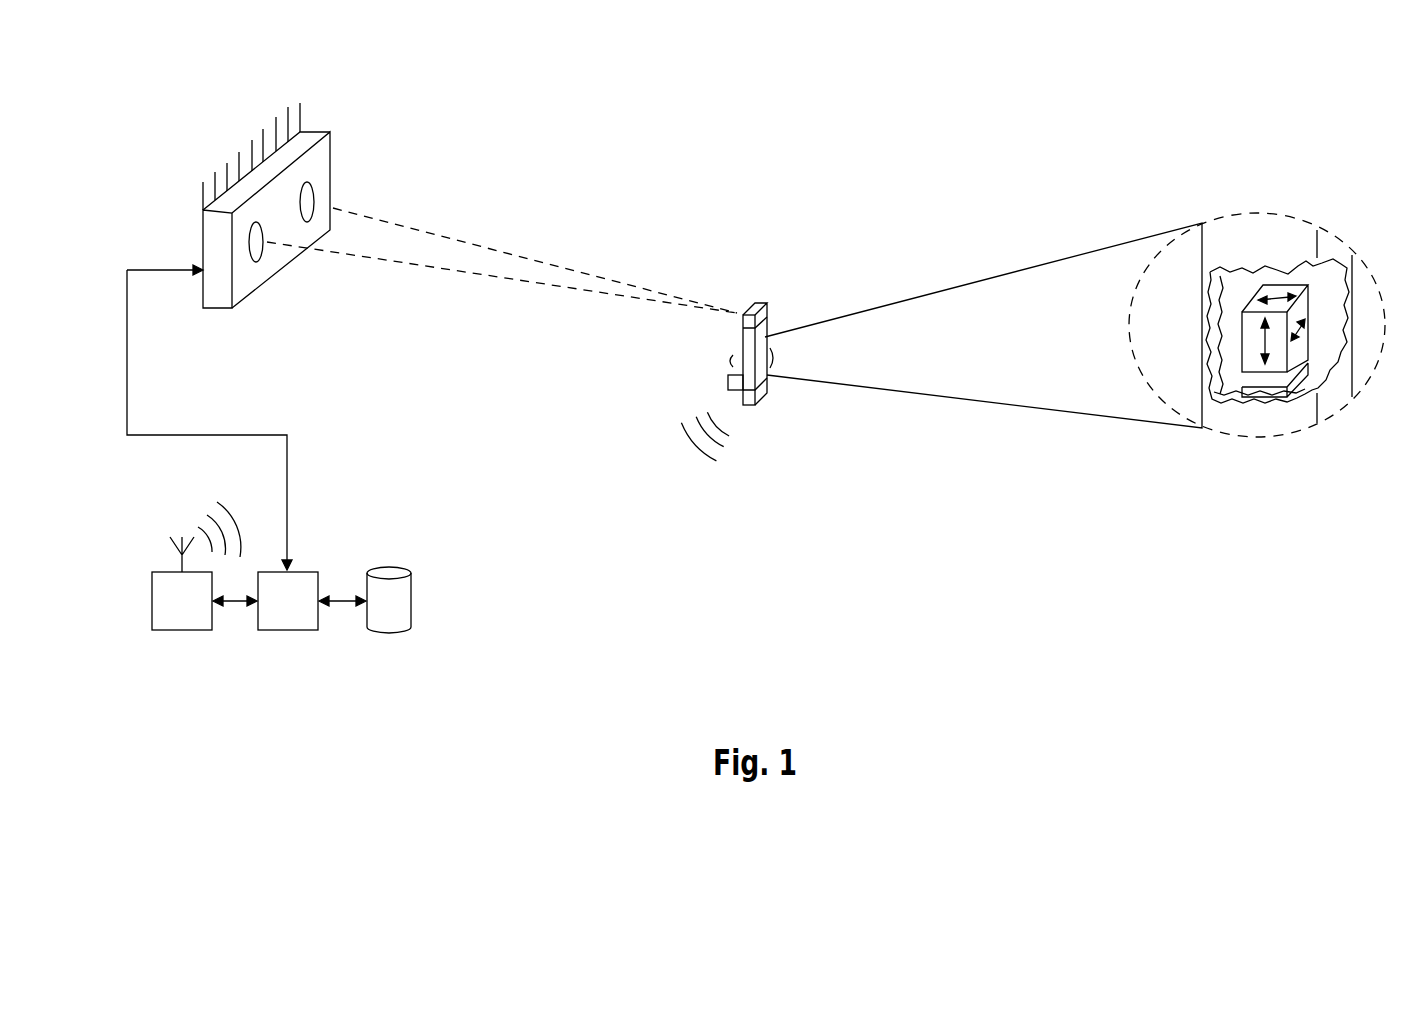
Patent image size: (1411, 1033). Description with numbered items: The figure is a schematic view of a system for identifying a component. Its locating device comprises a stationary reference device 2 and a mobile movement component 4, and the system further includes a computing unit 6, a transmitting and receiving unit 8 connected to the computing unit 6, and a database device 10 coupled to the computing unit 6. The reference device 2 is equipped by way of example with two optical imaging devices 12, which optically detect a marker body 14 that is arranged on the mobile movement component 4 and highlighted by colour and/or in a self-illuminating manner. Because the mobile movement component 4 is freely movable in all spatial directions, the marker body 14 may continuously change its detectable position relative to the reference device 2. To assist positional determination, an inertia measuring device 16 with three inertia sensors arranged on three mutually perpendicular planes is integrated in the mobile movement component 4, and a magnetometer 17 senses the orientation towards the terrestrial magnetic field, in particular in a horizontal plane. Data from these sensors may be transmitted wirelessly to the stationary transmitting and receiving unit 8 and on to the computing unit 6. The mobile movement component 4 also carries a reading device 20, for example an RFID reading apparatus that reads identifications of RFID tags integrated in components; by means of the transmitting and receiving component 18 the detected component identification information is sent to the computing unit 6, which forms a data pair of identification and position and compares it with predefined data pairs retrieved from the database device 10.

The stationary reference device 2 is at (323, 187).
The optical imaging devices 12 is at (311, 202).
The marker body 14 is at (772, 296).
The mobile movement component 4 is at (758, 333).
The reading device 20 is at (720, 383).
The transmitting and receiving component 18 is at (762, 413).
The inertia measuring device 16 is at (1272, 365).
The magnetometer 17 is at (1300, 385).
The transmitting and receiving unit 8 is at (178, 620).
The computing unit 6 is at (283, 620).
The database device 10 is at (390, 620).